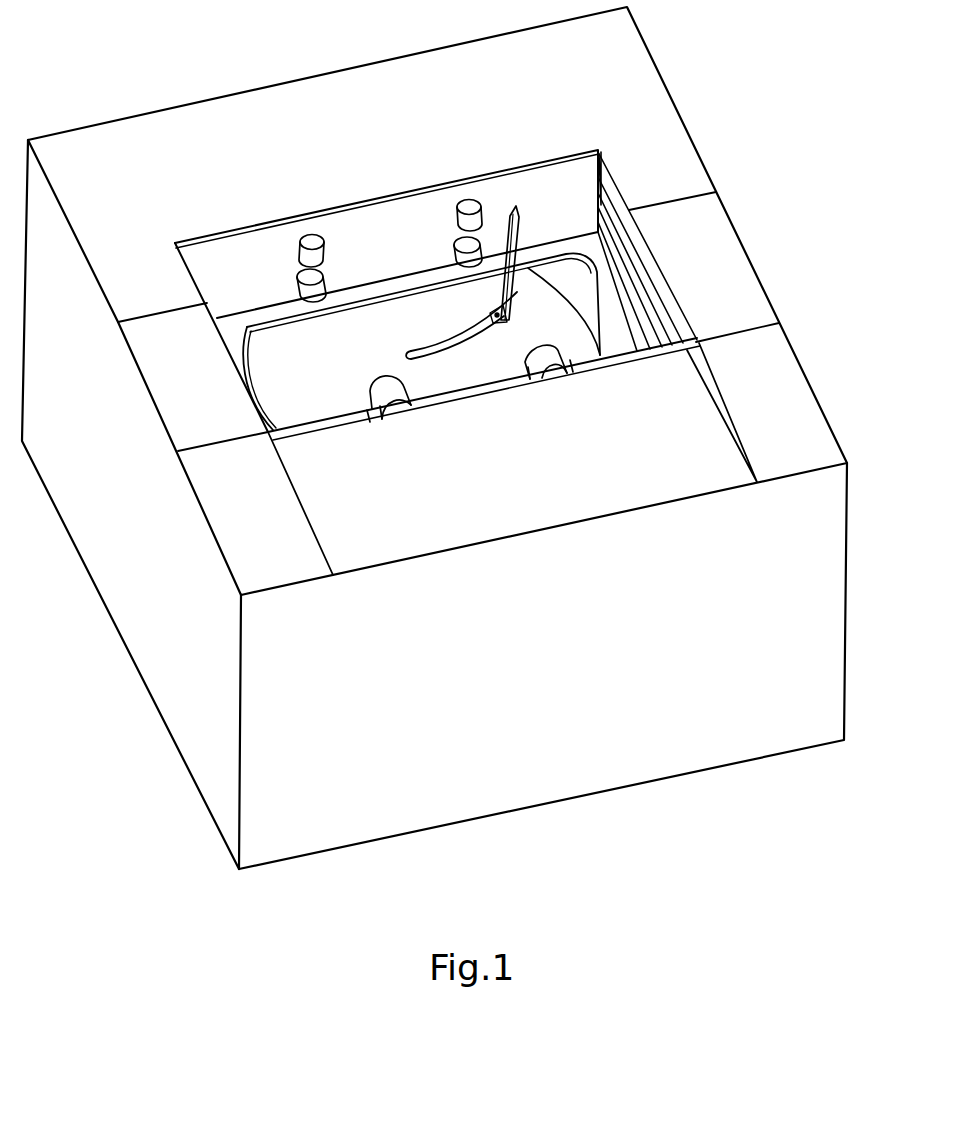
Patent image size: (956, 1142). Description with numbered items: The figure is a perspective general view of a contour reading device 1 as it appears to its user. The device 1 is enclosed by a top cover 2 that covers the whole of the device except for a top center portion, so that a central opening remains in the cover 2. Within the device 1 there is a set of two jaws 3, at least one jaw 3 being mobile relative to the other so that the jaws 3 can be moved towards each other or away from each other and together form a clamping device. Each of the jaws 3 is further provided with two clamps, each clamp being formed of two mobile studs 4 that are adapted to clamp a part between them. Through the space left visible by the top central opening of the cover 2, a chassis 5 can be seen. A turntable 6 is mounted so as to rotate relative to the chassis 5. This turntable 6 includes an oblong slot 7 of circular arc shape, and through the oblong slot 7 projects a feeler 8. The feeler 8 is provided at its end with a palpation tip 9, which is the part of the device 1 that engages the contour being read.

The contour reading device 1 is at (123, 102).
The top cover 2 is at (788, 383).
The jaw 3 is at (237, 257).
The mobile stud 4 is at (330, 280).
The chassis 5 is at (620, 310).
The turntable 6 is at (280, 372).
The oblong slot 7 is at (465, 343).
The feeler 8 is at (518, 238).
The palpation tip 9 is at (512, 213).